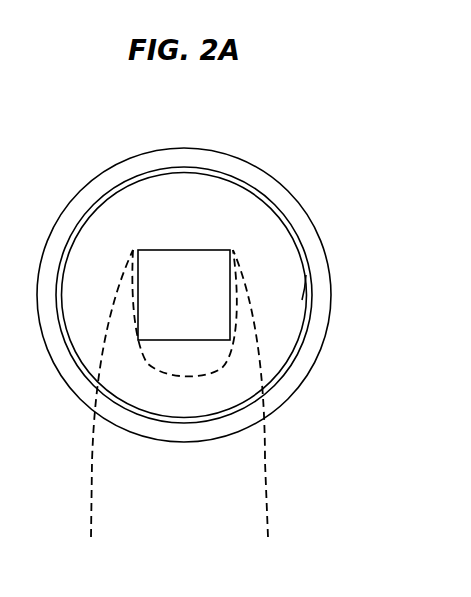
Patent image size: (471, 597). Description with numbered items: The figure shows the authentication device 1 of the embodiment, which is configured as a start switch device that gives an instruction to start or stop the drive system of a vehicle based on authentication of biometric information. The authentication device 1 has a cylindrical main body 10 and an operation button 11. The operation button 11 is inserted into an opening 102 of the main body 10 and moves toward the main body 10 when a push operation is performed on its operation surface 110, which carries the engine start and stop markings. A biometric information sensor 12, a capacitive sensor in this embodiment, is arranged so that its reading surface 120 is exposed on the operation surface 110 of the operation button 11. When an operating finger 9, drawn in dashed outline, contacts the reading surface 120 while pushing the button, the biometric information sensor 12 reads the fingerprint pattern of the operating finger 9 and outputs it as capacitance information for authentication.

The authentication device 1 is at (210, 266).
The main body 10 is at (308, 238).
The operation button 11 is at (291, 221).
The operation surface 110 is at (252, 212).
The opening 102 is at (309, 276).
The biometric information sensor 12 is at (230, 312).
The reading surface 120 is at (213, 322).
The operating finger 9 is at (265, 470).